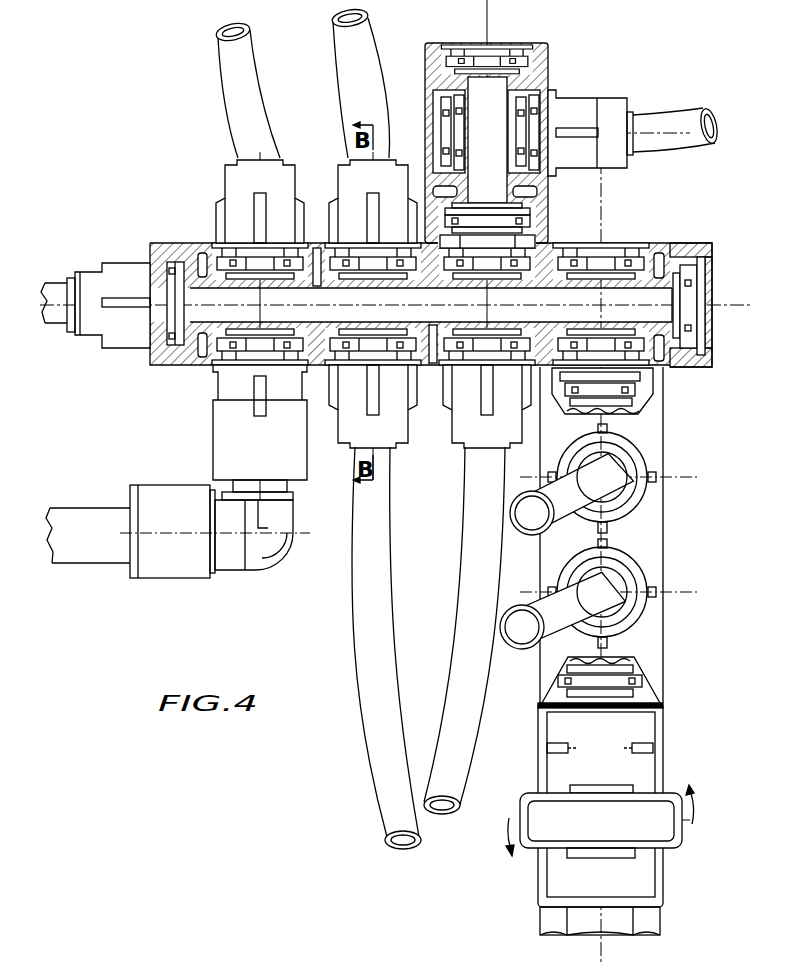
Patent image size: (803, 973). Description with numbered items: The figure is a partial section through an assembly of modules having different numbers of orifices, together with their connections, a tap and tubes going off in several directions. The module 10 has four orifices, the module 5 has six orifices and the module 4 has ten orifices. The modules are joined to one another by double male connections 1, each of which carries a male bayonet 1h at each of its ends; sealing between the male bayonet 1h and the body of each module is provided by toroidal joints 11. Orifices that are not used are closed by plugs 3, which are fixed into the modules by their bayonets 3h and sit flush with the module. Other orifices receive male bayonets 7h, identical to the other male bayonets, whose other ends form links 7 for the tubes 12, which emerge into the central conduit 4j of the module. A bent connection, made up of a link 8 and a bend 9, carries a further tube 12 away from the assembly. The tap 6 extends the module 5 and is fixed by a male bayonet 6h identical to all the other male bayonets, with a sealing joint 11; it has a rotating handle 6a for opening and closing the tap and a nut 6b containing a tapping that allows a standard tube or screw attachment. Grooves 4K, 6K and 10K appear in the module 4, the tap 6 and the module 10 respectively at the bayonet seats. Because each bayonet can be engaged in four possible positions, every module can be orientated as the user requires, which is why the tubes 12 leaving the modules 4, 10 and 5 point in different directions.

The double male connection 1 is at (537, 242).
The male bayonet 1h is at (517, 218).
The plug 3 is at (447, 127).
The bayonet of the plug 3h is at (433, 127).
The module 4 is at (187, 255).
The central conduit 4j is at (172, 300).
The housing groove 4K is at (203, 257).
The module 5 is at (653, 428).
The tap 6 is at (638, 735).
The rotating handle 6a is at (552, 830).
The nut 6b is at (552, 917).
The male bayonet 6h is at (646, 684).
The valve groove 6K is at (546, 757).
The link for tubes 7 is at (238, 190).
The male bayonet 7h is at (170, 312).
The link 8 is at (230, 432).
The bend 9 is at (175, 500).
The module 10 is at (552, 62).
The housing slot 10K is at (540, 188).
The toroidal joint 11 is at (316, 470).
The tube 12 is at (233, 60).